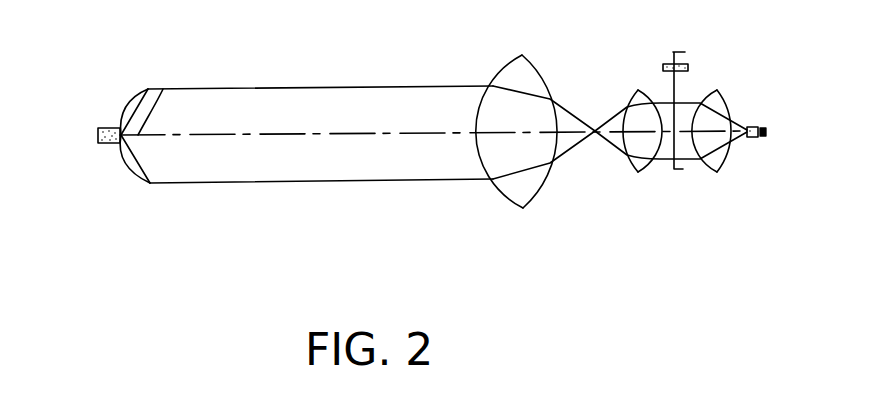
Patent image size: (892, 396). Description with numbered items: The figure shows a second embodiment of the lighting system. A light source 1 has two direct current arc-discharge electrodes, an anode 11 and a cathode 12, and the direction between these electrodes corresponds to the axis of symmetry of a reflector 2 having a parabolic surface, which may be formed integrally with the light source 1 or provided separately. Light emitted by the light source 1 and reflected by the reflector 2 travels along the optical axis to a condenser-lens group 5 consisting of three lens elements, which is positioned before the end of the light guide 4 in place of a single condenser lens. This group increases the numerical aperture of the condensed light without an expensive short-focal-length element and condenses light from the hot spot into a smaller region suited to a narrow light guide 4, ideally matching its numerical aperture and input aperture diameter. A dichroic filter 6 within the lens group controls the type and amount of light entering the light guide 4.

The light source 1 is at (136, 152).
The reflector 2 is at (124, 168).
The light guide 4 is at (753, 138).
The condenser-lens group 5 is at (727, 207).
The dichroic filter 6 is at (676, 89).
The anode 11 is at (97, 128).
The cathode 12 is at (163, 89).